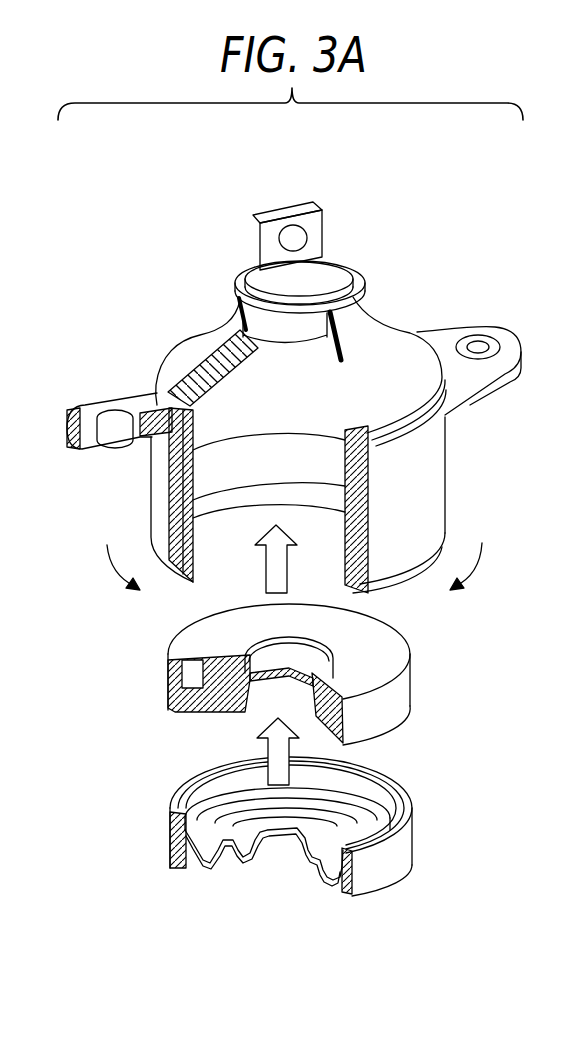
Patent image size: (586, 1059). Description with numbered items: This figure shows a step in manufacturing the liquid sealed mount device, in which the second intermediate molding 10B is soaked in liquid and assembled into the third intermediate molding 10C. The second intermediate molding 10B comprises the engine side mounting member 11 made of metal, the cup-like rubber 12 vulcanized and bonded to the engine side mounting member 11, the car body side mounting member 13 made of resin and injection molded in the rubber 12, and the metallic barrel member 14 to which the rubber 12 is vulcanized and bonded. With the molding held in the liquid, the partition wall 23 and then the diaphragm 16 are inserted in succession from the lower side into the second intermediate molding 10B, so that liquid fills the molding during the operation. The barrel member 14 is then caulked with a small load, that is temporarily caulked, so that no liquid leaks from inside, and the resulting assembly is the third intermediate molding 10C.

The second intermediate molding 10B is at (187, 330).
The engine side mounting member 11 is at (323, 278).
The cup-like rubber 12 is at (377, 348).
The car body side mounting member 13 is at (412, 485).
The barrel member 14 is at (397, 585).
The partition wall 23 is at (168, 682).
The diaphragm 16 is at (170, 840).
The third intermediate molding 10C is at (450, 775).